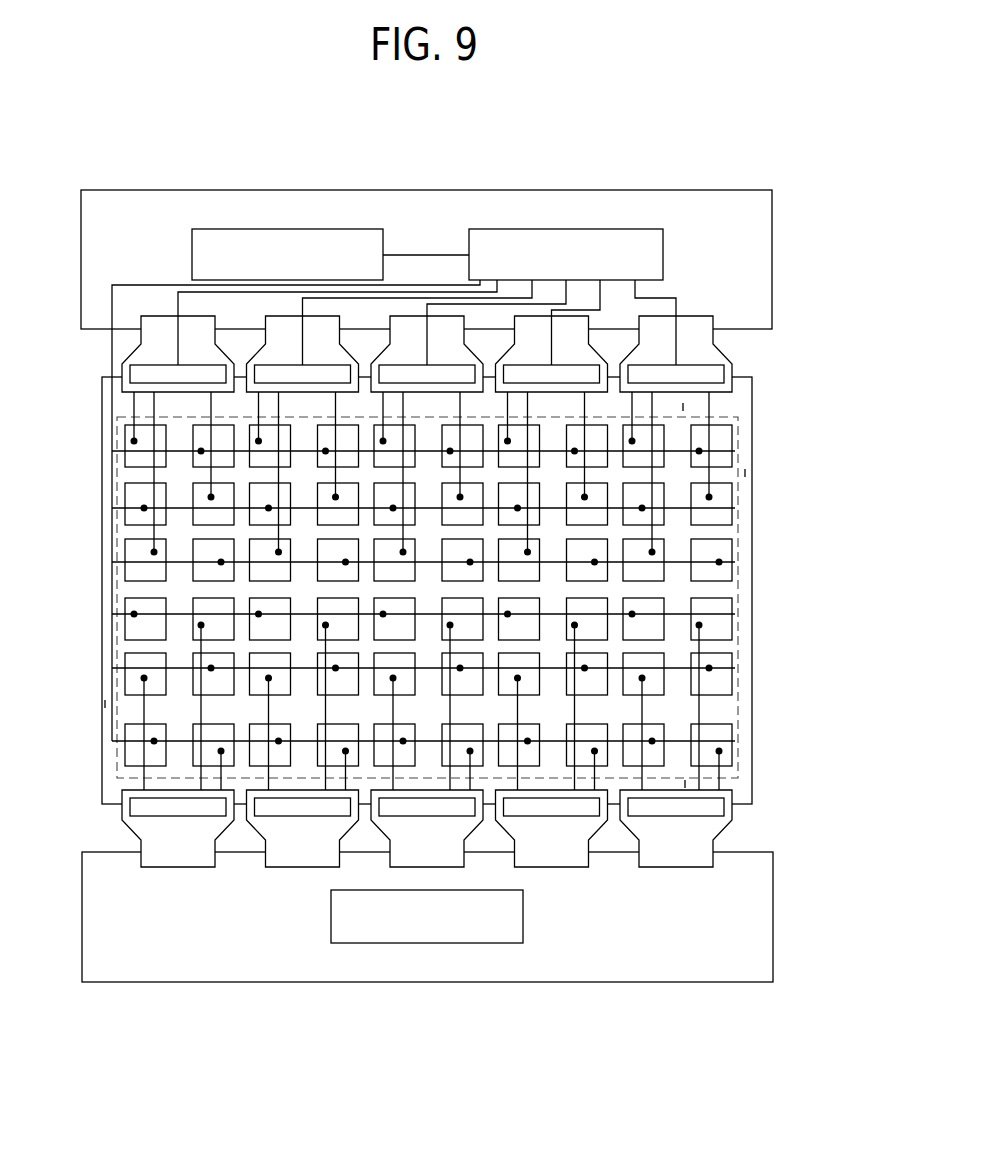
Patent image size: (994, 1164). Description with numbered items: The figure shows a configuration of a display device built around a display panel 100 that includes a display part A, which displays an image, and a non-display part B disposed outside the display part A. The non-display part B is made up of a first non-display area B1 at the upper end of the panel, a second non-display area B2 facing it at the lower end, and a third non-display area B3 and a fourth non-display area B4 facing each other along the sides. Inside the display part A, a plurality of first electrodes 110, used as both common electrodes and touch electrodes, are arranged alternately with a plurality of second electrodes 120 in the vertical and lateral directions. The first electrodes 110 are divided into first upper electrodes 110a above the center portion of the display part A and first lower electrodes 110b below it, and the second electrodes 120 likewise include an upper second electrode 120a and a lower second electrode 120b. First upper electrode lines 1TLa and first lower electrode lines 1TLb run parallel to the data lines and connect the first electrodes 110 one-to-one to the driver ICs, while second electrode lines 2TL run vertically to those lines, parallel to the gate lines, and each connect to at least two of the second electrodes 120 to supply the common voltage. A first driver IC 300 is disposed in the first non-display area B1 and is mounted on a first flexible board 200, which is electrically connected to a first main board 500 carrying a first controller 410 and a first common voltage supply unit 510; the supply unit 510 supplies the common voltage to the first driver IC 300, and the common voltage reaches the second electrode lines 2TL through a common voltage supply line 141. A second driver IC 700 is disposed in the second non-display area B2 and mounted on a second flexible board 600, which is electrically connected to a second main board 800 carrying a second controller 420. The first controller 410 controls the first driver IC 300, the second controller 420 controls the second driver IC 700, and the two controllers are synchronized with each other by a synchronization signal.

The display panel 100 is at (752, 507).
The first electrodes 110 is at (83, 617).
The first upper electrodes 110a is at (131, 573).
The first lower electrodes 110b is at (105, 670).
The second electrodes 120 is at (705, 617).
The second electrode (upper) 120a is at (575, 570).
The second electrode (lower) 120b is at (596, 659).
The common voltage supply line 141 is at (112, 297).
The first flexible board 200 is at (682, 342).
The first driver IC 300 is at (720, 369).
The first controller 410 is at (303, 267).
The second controller 420 is at (443, 930).
The first main board 500 is at (772, 255).
The first common voltage supply unit 510 is at (583, 267).
The second flexible board 600 is at (680, 837).
The second driver IC 700 is at (717, 809).
The second main board 800 is at (773, 918).
The first upper electrode lines 1TLa is at (710, 441).
The first lower electrode lines 1TLb is at (700, 709).
The second electrode lines 2TL is at (125, 452).
The display part A is at (740, 677).
The non-display part B is at (750, 545).
The first non-display area B1 is at (683, 407).
The second non-display area B2 is at (685, 784).
The third non-display area B3 is at (105, 704).
The fourth non-display area B4 is at (745, 473).